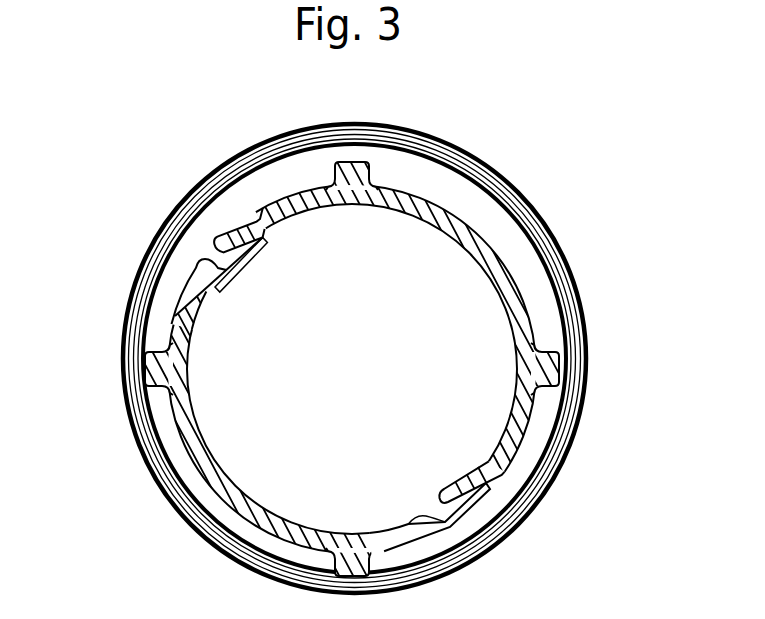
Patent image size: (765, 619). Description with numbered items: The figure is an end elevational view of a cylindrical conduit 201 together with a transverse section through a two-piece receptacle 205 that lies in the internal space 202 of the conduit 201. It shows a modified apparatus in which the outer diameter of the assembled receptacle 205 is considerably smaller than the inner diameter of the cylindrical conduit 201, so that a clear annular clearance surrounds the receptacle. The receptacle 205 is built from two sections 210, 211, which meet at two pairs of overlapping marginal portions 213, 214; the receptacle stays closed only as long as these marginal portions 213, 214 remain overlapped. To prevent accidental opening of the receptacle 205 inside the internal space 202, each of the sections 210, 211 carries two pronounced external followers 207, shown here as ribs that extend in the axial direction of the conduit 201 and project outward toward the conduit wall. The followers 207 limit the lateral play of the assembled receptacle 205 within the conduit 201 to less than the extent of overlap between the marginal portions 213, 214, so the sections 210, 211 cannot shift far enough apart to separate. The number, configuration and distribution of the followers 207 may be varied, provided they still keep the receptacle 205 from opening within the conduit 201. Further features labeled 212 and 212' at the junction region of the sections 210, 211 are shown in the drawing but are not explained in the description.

The cylindrical conduit 201 is at (172, 208).
The internal space 202 is at (528, 273).
The two-piece receptacle 205 is at (295, 182).
The external followers 207 is at (542, 372).
The section 210 is at (196, 446).
The section 211 is at (465, 237).
The hooked ring end 212 is at (206, 189).
The projection on ring end 212' is at (155, 264).
The marginal portion 213 is at (468, 500).
The marginal portion 214 is at (475, 477).